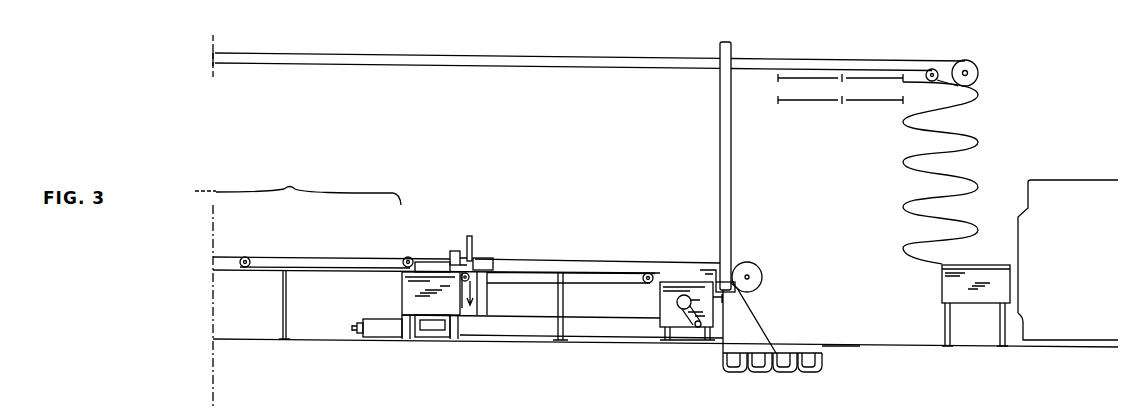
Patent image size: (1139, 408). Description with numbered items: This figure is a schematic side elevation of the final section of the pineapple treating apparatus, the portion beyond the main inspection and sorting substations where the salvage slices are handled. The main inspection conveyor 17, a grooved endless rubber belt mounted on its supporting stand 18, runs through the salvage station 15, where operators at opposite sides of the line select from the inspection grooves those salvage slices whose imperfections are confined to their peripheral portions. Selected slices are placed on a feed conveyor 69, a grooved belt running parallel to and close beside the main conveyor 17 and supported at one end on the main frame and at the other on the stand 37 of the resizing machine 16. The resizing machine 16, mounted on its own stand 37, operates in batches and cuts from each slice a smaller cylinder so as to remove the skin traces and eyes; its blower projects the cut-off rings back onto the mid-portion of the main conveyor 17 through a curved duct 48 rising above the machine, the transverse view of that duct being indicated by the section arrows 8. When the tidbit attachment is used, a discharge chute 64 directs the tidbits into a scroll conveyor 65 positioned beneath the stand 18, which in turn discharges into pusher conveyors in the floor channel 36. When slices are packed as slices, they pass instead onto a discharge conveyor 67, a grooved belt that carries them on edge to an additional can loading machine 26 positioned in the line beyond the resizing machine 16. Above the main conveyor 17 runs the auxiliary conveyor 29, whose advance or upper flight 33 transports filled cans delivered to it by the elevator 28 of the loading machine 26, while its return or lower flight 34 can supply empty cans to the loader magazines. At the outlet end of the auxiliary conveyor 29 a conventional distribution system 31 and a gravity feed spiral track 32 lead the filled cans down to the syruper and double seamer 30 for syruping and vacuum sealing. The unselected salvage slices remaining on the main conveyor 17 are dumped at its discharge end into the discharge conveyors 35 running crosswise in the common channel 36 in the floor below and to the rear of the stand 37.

The section line 8- 8 is at (372, 168).
The salvage station 15 is at (331, 251).
The resizing machine 16 is at (428, 262).
The main conveyor 17 is at (578, 262).
The supporting stand 18 is at (287, 302).
The can loading machine 26 is at (672, 282).
The elevator 28 is at (731, 157).
The auxiliary conveyor 29 is at (595, 61).
The double seamer 30 is at (975, 264).
The distribution system 31 is at (818, 101).
The spiral track 32 is at (903, 163).
The upper flight 33 is at (551, 58).
The lower flight 34 is at (550, 68).
The discharge conveyor 35 is at (779, 344).
The channel 36 is at (823, 346).
The stand 37 is at (459, 328).
The guide rod 48 is at (470, 236).
The discharge chute 64 is at (484, 291).
The scroll conveyor 65 is at (518, 313).
The discharge conveyor 67 is at (520, 266).
The feed conveyor 69 is at (316, 257).